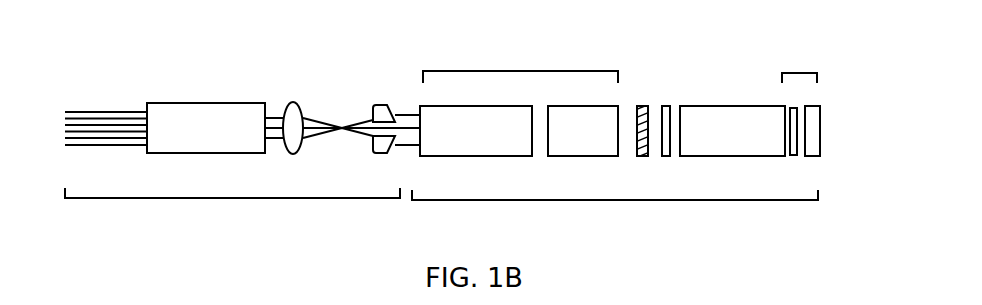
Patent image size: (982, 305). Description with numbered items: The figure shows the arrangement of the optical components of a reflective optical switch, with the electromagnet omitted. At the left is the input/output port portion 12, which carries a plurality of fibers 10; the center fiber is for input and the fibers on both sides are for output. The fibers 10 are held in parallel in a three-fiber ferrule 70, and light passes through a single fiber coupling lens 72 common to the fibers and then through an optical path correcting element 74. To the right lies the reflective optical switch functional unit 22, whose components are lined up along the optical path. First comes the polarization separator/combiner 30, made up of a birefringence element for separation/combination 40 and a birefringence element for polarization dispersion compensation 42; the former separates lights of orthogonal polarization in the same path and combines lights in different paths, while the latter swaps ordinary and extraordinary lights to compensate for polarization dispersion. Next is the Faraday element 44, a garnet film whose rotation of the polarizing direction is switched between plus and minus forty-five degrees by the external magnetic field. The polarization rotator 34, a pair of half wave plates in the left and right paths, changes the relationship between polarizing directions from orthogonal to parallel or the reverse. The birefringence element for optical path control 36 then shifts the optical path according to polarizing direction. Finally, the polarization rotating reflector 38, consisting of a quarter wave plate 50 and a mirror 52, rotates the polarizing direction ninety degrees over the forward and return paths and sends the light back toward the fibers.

The fibers 10 is at (97, 110).
The three-fiber ferrule 70 is at (201, 112).
The single fiber coupling lens 72 is at (287, 112).
The optical path correcting element 74 is at (384, 93).
The polarization separator/combiner 30 is at (520, 61).
The birefringence element for separation/combination 40 is at (475, 147).
The birefringence element for polarization dispersion compensation 42 is at (577, 147).
The Faraday element 44 is at (637, 105).
The polarization rotator 34 is at (676, 99).
The birefringence element for optical path control 36 is at (732, 148).
The ¼ wave plate 50 is at (792, 150).
The mirror 52 is at (820, 145).
The polarization rotating reflector 38 is at (799, 61).
The input/output port portion 12 is at (232, 210).
The reflective optical switch functional unit 22 is at (615, 212).